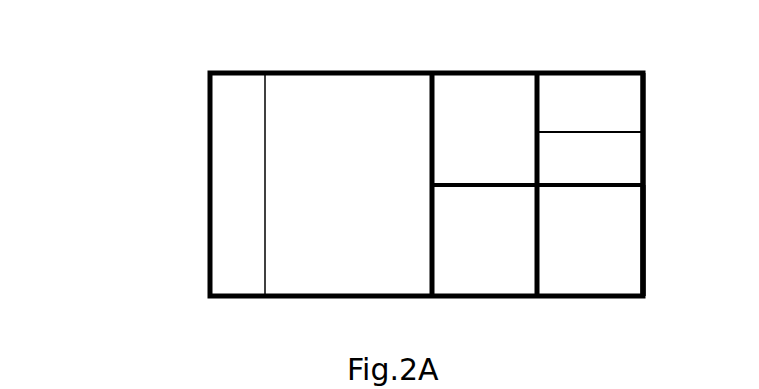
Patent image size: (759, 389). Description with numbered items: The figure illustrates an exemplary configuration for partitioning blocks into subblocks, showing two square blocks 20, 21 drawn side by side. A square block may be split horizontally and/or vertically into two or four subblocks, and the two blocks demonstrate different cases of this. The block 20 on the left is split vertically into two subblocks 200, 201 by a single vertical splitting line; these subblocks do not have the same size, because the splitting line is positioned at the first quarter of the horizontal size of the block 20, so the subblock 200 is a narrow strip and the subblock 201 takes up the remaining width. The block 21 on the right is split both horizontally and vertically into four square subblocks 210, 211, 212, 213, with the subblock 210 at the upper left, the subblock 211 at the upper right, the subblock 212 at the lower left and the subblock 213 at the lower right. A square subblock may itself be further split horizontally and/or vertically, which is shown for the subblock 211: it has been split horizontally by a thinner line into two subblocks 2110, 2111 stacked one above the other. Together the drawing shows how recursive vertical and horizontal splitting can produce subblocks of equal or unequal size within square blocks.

The square block 20 is at (210, 76).
The subblock 200 is at (232, 155).
The subblock 201 is at (350, 83).
The square subblock 210 is at (465, 83).
The square block 21 is at (645, 73).
The square subblock 211 is at (568, 77).
The subblock 2110 is at (618, 103).
The subblock 2111 is at (627, 162).
The square subblock 212 is at (481, 275).
The square subblock 213 is at (618, 248).